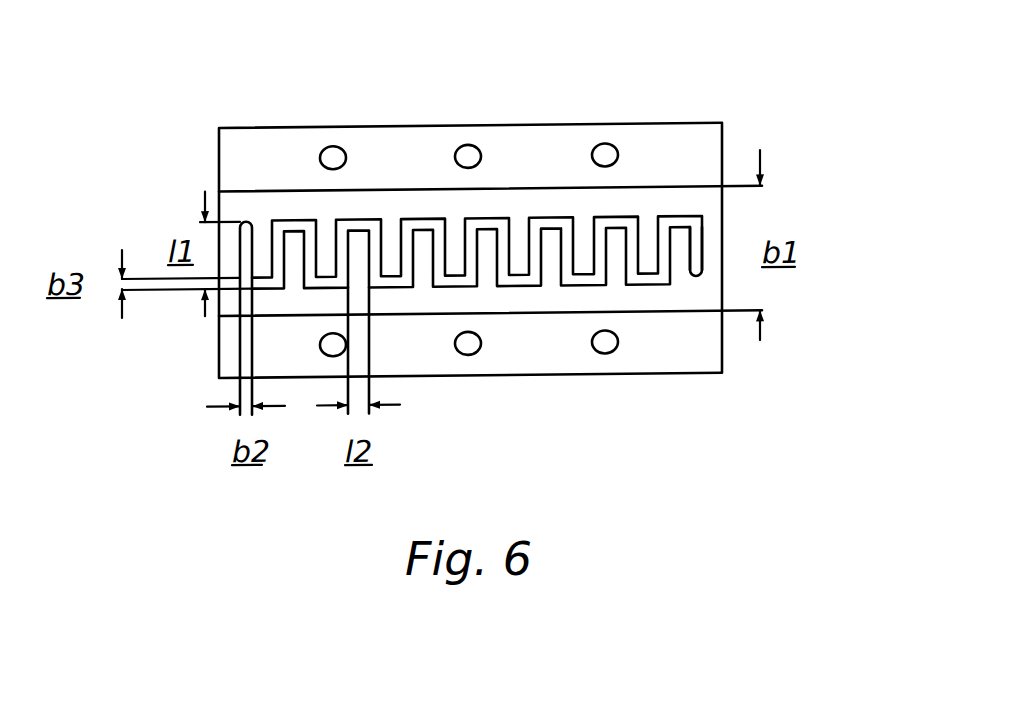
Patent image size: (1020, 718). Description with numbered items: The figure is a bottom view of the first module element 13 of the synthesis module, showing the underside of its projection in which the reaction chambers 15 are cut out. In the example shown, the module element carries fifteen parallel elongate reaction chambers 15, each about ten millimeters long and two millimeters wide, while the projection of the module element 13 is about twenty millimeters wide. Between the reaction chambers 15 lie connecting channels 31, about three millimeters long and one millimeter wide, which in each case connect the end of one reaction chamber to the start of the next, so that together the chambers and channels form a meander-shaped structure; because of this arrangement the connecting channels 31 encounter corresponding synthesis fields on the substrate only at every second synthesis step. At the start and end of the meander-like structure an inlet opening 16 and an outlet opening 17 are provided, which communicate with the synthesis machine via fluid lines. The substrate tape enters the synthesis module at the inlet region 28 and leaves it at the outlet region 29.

The first module element 13 is at (691, 96).
The reaction chambers 15 is at (408, 264).
The inlet opening 16 is at (696, 283).
The outlet opening 17 is at (245, 226).
The inlet region 28 is at (152, 200).
The outlet region 29 is at (750, 221).
The connecting channels 31 is at (388, 285).